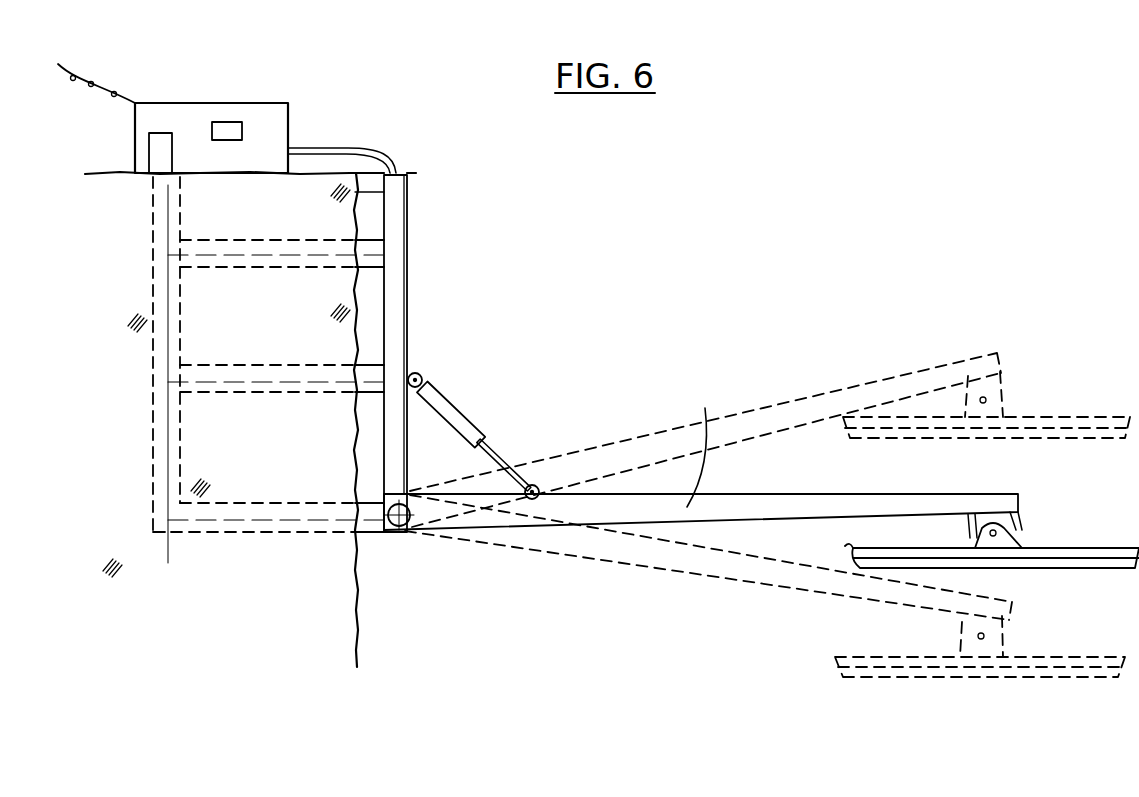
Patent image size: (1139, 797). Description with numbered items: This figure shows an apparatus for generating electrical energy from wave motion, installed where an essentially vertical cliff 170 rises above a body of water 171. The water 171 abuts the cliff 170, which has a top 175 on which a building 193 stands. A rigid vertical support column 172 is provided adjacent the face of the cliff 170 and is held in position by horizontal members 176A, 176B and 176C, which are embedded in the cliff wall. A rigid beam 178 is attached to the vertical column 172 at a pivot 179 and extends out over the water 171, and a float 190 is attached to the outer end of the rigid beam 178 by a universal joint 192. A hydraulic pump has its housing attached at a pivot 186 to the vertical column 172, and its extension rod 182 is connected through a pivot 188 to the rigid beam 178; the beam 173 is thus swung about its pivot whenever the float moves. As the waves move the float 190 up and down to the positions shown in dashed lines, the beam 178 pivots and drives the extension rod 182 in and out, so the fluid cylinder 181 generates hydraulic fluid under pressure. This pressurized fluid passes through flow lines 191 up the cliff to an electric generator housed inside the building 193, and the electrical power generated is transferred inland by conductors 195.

The cliff 170 is at (357, 603).
The body of water 171 is at (607, 626).
The rigid vertical support column 172 is at (405, 265).
The arm 173 is at (553, 538).
The top of cliff 175 is at (102, 172).
The horizontal member 176A is at (365, 240).
The horizontal member 176B is at (365, 365).
The horizontal member 176C is at (303, 528).
The rigid beam 178 is at (695, 446).
The pivot 179 is at (406, 526).
The hydraulic cylinder 181 is at (453, 400).
The extension rod 182 is at (505, 459).
The pivot 186 is at (417, 373).
The pivot 188 is at (540, 487).
The float 190 is at (1075, 548).
The flow lines 191 is at (385, 152).
The universal joint 192 is at (1023, 530).
The building 193 is at (285, 100).
The conductors 195 is at (108, 75).